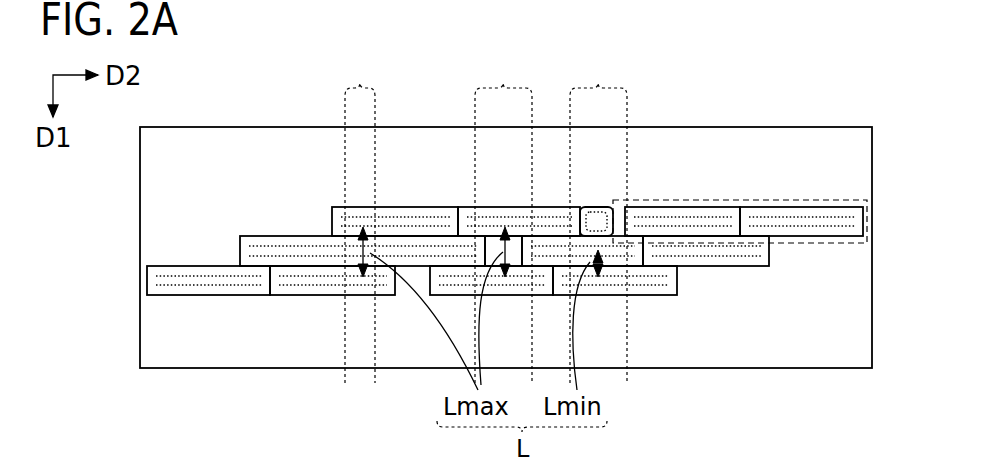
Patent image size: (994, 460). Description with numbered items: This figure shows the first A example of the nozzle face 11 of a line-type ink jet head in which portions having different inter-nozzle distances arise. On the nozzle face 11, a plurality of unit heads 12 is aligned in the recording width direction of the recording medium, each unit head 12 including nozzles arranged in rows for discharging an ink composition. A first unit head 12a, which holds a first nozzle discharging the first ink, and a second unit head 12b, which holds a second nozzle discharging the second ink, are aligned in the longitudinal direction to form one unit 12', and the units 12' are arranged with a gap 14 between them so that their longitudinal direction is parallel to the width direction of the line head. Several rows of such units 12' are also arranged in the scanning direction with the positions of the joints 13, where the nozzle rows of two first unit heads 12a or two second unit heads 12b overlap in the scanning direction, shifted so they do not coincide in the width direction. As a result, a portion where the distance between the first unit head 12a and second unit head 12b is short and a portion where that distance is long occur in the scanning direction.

The nozzle face 11 is at (227, 127).
The unit head 12 is at (744, 140).
The first unit head 12a is at (663, 207).
The second unit head 12b is at (793, 207).
The unit 12' is at (761, 193).
The joint 13 is at (486, 221).
The gap 14 is at (597, 205).